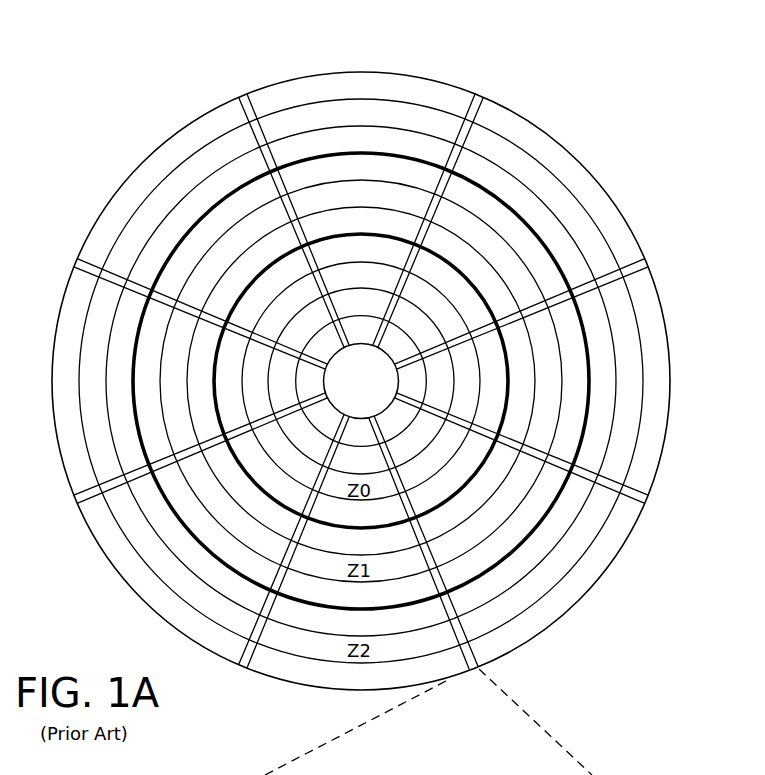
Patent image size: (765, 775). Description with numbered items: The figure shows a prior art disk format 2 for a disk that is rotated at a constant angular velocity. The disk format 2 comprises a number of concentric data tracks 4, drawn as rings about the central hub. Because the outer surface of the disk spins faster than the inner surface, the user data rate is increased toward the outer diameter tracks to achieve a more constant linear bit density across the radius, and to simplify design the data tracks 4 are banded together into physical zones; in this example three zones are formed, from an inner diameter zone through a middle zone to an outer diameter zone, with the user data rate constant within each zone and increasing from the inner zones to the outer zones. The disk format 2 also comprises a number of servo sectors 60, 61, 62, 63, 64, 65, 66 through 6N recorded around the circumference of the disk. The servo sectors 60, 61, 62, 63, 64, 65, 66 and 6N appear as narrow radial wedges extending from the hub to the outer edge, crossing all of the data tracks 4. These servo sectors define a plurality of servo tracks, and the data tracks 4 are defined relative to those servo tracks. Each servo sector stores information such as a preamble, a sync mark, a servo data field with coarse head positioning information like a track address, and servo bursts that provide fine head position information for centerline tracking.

The disk format 2 is at (572, 143).
The data tracks 4 is at (358, 115).
The servo sector 60 is at (486, 98).
The servo sector 61 is at (647, 263).
The servo sector 62 is at (648, 502).
The servo sector 63 is at (234, 774).
The servo sector 64 is at (241, 662).
The servo sector 65 is at (77, 498).
The servo sector 66 is at (78, 258).
The servo sector 6N is at (252, 100).